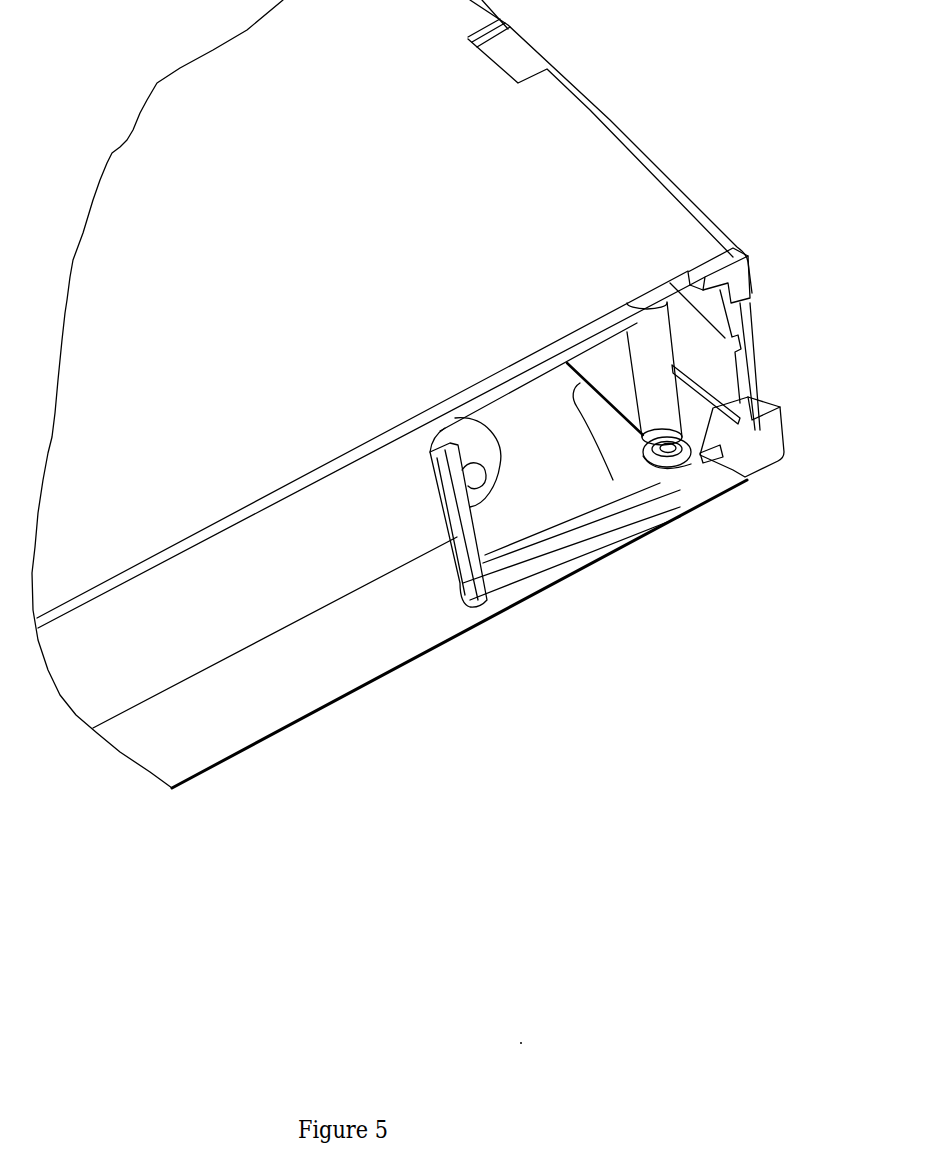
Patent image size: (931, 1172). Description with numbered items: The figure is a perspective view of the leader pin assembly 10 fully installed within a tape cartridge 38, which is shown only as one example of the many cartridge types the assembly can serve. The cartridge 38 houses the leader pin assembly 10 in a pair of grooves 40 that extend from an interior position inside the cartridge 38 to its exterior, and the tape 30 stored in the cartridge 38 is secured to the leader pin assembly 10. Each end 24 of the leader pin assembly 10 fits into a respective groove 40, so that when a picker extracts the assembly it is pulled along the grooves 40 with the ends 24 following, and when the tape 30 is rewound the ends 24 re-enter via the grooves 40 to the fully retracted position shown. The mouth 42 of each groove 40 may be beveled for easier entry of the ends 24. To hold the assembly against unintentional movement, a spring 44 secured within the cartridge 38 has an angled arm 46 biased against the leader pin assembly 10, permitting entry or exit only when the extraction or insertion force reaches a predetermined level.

The leader pin assembly 10 is at (668, 347).
The end 24 is at (683, 467).
The tape 30 is at (623, 383).
The cartridge 38 is at (377, 635).
The groove 40 is at (685, 267).
The mouth 42 is at (712, 493).
The spring 44 is at (693, 438).
The arm 46 is at (707, 450).